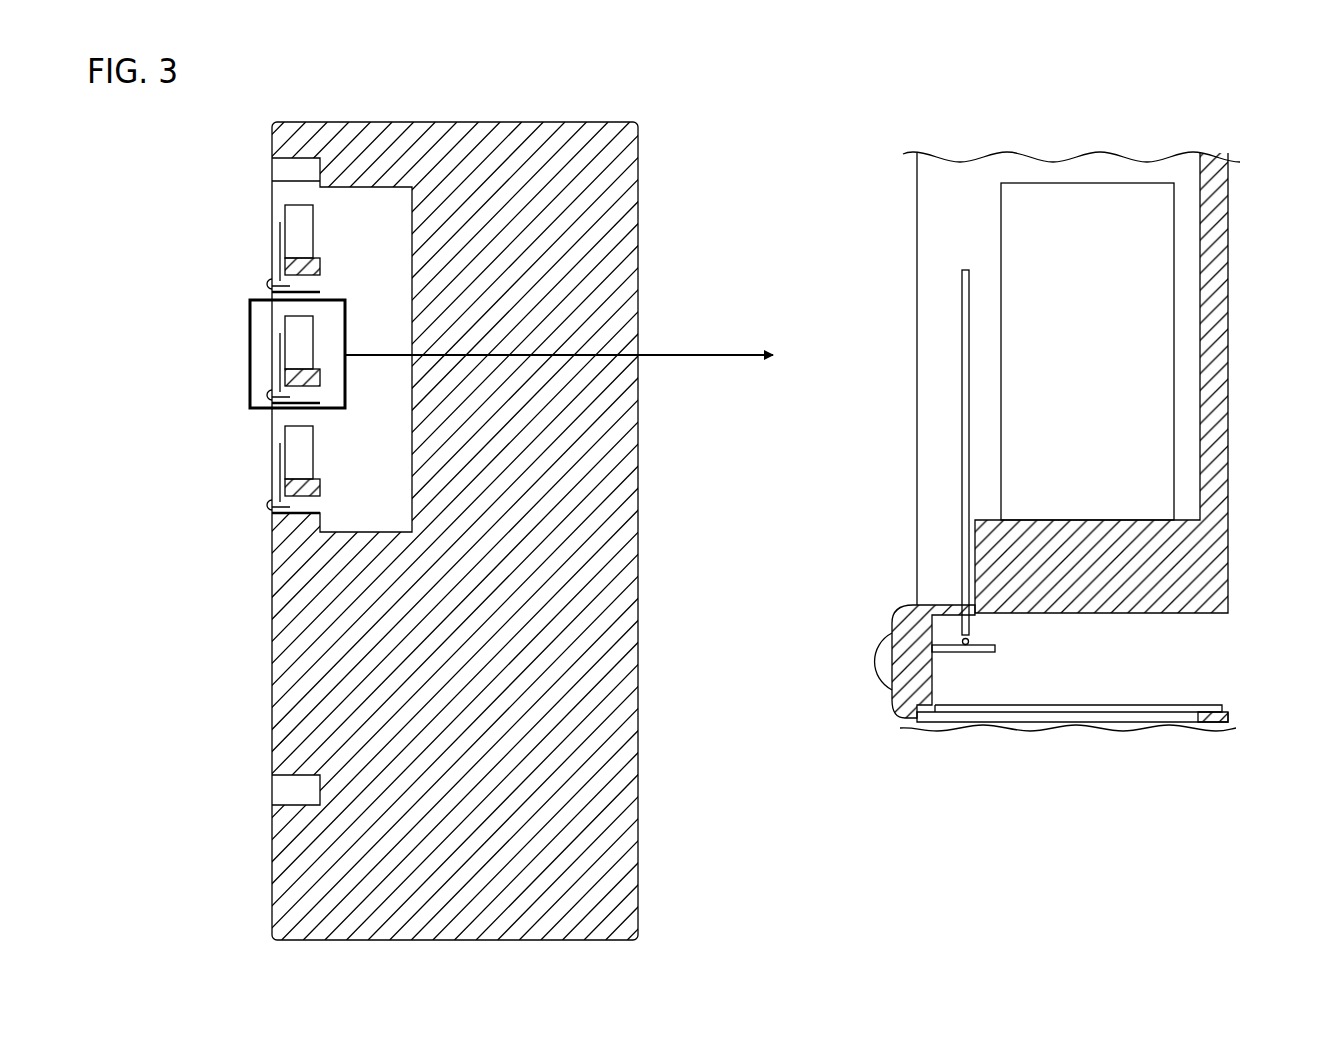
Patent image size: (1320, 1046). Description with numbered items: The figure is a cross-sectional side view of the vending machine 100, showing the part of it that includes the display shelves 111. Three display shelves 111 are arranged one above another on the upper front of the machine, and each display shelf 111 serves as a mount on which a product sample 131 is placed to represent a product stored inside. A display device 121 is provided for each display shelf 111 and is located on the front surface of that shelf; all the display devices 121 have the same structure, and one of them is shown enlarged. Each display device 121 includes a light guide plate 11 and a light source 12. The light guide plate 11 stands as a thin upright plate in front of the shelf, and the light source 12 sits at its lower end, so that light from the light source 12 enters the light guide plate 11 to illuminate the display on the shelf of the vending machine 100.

The vending machine 100 is at (670, 882).
The product sample 131 is at (297, 207).
The display device 121 is at (280, 232).
The display shelf 111 is at (284, 272).
The light guide plate 11 is at (953, 260).
The light source 12 is at (966, 661).